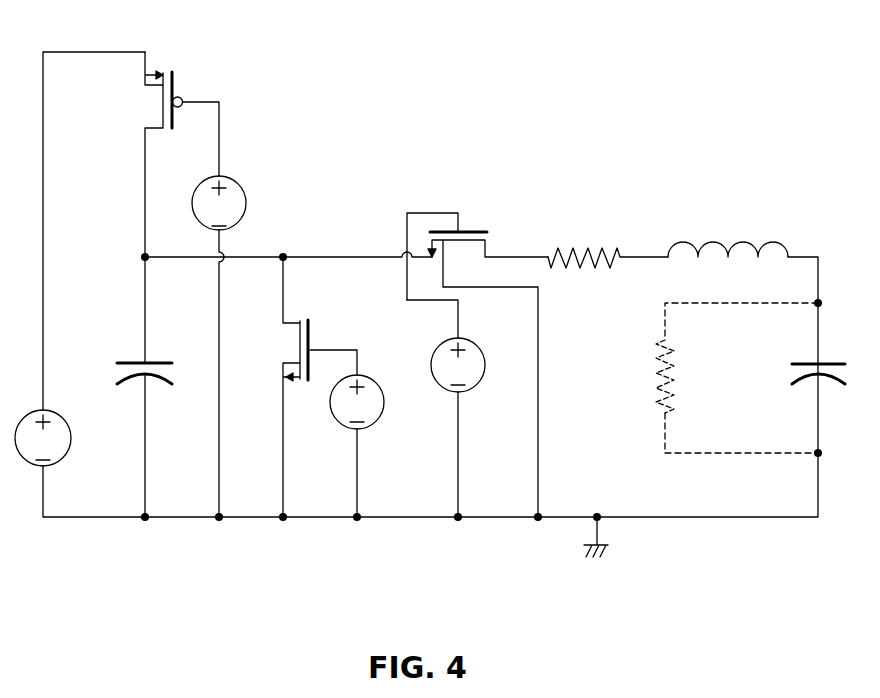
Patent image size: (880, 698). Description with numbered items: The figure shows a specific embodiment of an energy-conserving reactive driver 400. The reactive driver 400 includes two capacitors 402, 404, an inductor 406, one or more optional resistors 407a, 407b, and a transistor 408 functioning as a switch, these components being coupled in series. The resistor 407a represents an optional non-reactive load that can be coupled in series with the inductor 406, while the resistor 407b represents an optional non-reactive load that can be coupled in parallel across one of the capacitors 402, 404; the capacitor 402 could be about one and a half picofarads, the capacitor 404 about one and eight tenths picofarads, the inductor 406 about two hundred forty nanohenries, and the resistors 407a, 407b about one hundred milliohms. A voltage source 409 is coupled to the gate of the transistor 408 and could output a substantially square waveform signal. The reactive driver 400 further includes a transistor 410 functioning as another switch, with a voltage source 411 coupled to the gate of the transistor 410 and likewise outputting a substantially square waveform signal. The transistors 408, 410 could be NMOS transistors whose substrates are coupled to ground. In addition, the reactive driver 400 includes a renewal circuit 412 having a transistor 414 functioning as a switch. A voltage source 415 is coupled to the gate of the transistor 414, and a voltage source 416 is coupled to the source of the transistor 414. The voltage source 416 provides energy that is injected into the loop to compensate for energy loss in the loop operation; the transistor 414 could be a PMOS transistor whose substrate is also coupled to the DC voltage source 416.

The reactive driver 400 is at (430, 286).
The capacitor 402 is at (124, 362).
The capacitor 404 is at (796, 363).
The inductor 406 is at (742, 243).
The resistor 407a is at (572, 248).
The resistor 407b is at (655, 372).
The transistor 408 is at (474, 230).
The voltage source 409 is at (476, 388).
The transistor 410 is at (296, 320).
The voltage source 411 is at (370, 378).
The renewal circuit 412 is at (229, 266).
The transistor 414 is at (172, 72).
The voltage source 415 is at (236, 175).
The voltage source 416 is at (70, 447).